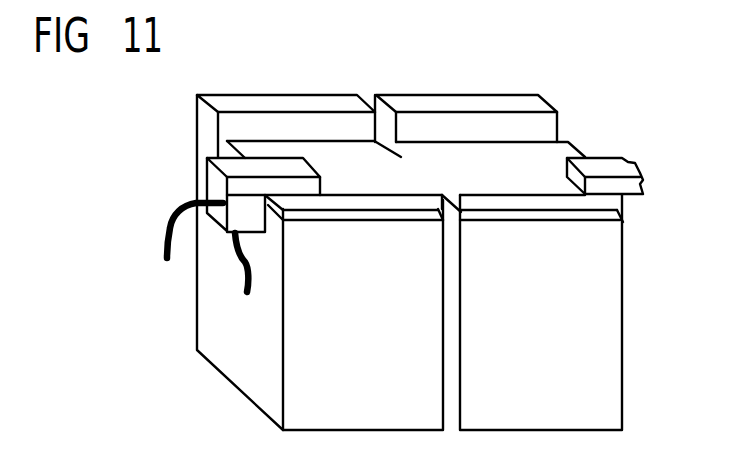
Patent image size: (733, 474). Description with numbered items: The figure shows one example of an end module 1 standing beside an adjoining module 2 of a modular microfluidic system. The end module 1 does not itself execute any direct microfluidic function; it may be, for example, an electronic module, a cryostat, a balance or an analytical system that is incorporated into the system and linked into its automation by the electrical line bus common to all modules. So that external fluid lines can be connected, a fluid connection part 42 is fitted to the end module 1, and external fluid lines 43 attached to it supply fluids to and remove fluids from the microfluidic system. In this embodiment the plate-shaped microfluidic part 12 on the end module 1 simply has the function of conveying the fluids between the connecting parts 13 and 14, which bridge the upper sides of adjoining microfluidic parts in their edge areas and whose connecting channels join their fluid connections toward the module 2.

The end module 1 is at (208, 333).
The module 2 is at (603, 333).
The microfluidic part 12 is at (350, 170).
The connecting part 13 is at (207, 168).
The connecting part 14 is at (452, 168).
The fluid connection part 42 is at (222, 189).
The external fluid lines 43 is at (248, 267).